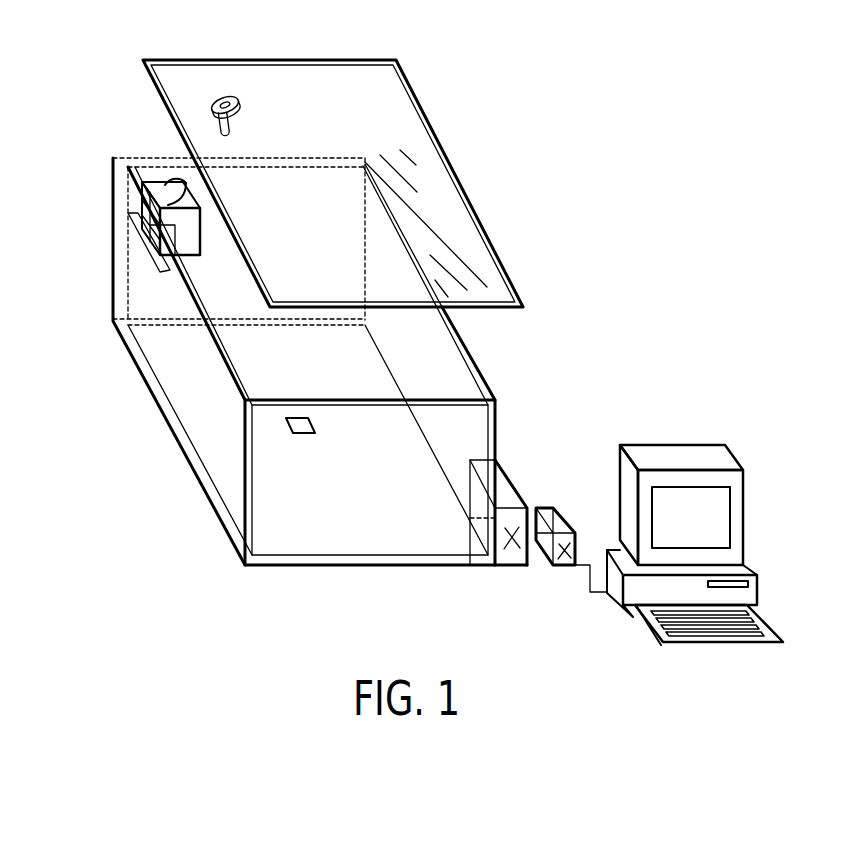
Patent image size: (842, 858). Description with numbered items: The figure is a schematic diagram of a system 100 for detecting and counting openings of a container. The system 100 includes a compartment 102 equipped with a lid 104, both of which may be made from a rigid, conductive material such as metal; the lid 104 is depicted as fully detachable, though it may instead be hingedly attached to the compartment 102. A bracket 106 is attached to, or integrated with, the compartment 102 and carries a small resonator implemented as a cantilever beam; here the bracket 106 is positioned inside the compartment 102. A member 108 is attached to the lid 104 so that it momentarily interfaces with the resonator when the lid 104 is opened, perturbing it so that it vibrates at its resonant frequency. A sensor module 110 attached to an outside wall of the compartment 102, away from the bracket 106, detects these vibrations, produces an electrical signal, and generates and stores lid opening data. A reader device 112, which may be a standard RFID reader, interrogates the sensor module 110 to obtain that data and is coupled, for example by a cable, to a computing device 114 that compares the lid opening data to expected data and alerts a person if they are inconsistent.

The system 100 is at (103, 552).
The compartment 102 is at (268, 560).
The lid 104 is at (504, 268).
The bracket 106 is at (125, 200).
The member 108 is at (212, 110).
The sensor module 110 is at (463, 565).
The reader device 112 is at (553, 508).
The computing device 114 is at (694, 455).